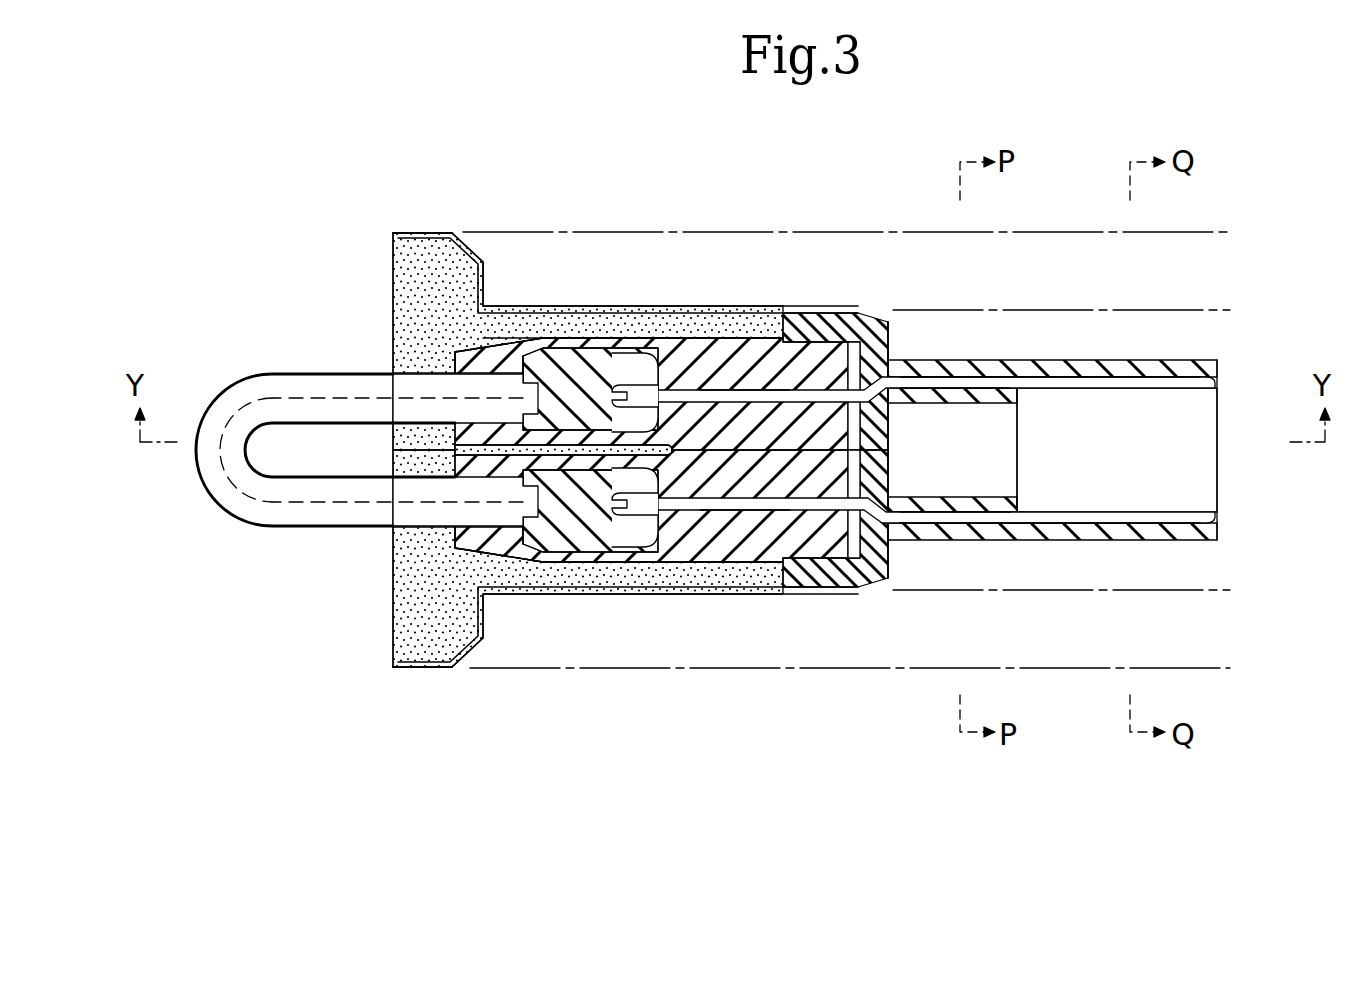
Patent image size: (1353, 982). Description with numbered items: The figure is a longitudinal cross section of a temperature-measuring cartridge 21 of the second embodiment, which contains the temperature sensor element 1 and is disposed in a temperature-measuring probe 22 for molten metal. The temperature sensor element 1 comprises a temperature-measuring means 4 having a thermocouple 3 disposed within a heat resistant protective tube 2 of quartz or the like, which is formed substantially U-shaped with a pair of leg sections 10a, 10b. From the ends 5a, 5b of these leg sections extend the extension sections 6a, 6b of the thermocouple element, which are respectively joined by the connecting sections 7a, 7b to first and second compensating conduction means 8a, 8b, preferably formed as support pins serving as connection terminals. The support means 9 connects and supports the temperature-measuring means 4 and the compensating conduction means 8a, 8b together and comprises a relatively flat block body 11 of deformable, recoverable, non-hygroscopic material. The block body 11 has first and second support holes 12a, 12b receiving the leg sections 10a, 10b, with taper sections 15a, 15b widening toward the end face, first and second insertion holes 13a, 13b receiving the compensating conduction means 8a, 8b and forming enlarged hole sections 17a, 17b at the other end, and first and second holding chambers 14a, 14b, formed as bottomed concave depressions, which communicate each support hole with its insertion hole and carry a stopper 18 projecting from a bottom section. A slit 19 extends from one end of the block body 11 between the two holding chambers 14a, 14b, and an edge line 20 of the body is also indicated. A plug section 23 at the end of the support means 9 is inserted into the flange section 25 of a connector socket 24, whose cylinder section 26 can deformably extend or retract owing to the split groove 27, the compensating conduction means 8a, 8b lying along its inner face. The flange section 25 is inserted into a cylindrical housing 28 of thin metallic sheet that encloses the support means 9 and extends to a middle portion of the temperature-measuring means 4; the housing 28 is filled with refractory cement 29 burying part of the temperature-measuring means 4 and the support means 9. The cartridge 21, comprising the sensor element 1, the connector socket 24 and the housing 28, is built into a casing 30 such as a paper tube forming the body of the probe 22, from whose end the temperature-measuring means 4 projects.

The temperature sensor element 1 is at (246, 537).
The protective tube 2 is at (285, 383).
The thermocouple 3 is at (232, 485).
The temperature-measuring means 4 is at (236, 370).
The end of leg section 5a is at (503, 362).
The end of leg section 5b is at (512, 517).
The extension section 6a is at (570, 360).
The extension section 6b is at (580, 555).
The connecting section 7a is at (655, 397).
The connecting section 7b is at (682, 563).
The first compensating conduction means 8a is at (1117, 388).
The second compensating conduction means 8b is at (960, 514).
The support means 9 is at (722, 690).
The block body 11 is at (619, 531).
The leg section 10a is at (315, 372).
The leg section 10b is at (310, 530).
The first support hole 12a is at (480, 258).
The second support hole 12b is at (459, 548).
The first insertion hole 13a is at (722, 392).
The second insertion hole 13b is at (775, 585).
The first holding chamber 14a is at (625, 360).
The second holding chamber 14b is at (613, 560).
The taper section 15a is at (457, 368).
The taper section 15b is at (452, 532).
The enlarged hole section 17a is at (818, 385).
The enlarged hole section 17b is at (833, 562).
The stopper 18 is at (543, 297).
The slit 19 is at (455, 450).
The body edge 20 is at (606, 355).
The temperature-measuring cartridge 21 is at (398, 676).
The temperature-measuring probe 22 is at (1179, 231).
The plug section 23 is at (800, 352).
The connector socket 24 is at (976, 356).
The flange section 25 is at (843, 327).
The cylinder section 26 is at (1017, 360).
The split groove 27 is at (1117, 525).
The housing 28 is at (428, 224).
The refractory cement 29 is at (410, 262).
The casing 30 is at (887, 668).